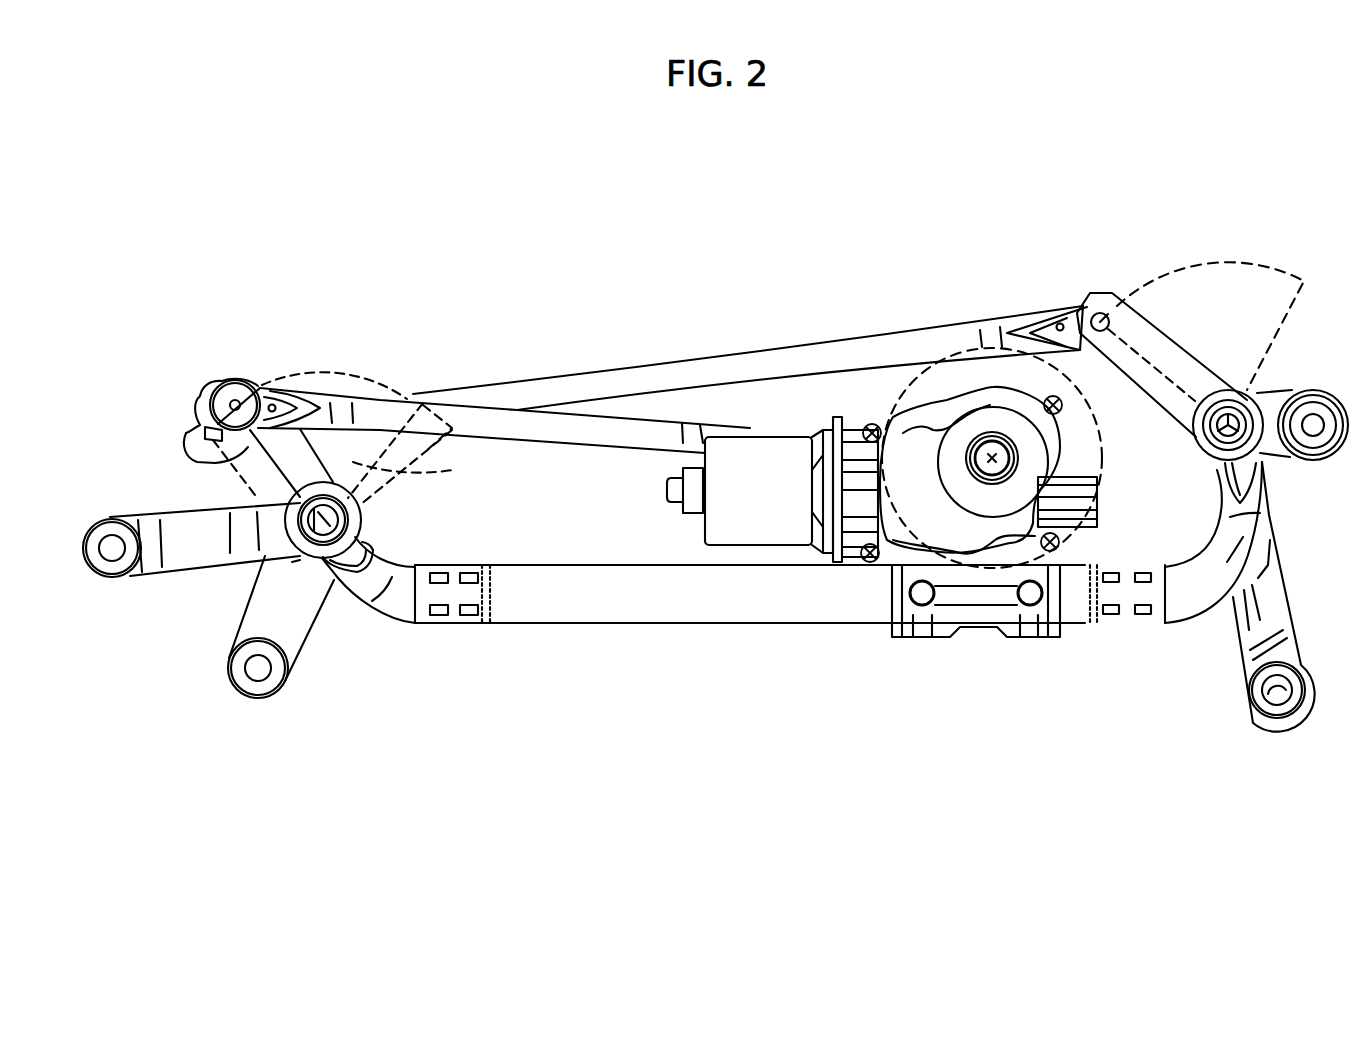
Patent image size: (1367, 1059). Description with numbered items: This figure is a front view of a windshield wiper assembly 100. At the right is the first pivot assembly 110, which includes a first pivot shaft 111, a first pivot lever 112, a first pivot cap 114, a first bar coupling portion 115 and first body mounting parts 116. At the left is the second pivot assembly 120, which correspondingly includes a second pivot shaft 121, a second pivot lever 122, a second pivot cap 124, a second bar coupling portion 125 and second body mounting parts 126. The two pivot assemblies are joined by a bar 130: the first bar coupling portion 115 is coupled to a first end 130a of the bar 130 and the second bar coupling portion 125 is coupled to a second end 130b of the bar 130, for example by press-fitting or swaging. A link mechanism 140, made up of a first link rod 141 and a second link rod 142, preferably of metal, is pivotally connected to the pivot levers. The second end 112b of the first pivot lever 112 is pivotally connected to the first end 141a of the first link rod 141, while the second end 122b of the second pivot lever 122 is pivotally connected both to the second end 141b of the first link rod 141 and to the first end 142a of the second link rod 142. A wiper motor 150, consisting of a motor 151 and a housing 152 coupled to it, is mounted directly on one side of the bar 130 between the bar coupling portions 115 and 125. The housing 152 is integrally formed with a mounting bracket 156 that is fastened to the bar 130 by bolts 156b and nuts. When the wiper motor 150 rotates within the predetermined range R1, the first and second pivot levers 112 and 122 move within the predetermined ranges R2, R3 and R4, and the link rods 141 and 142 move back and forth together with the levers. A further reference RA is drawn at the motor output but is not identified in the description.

The wiper assembly 100 is at (427, 263).
The first pivot assembly 110 is at (1290, 248).
The first pivot shaft 111 is at (1222, 440).
The first pivot lever 112 is at (1135, 368).
The second end of the first pivot lever 112b is at (1090, 312).
The first pivot cap 114 is at (1283, 393).
The first bar coupling portion 115 is at (1097, 622).
The first body mounting parts 116 is at (1277, 450).
The second pivot assembly 120 is at (88, 493).
The second pivot shaft 121 is at (300, 540).
The second pivot lever 122 is at (188, 456).
The second end of the second pivot lever 122b is at (190, 423).
The second pivot cap 124 is at (362, 535).
The second bar coupling portion 125 is at (481, 625).
The second body mounting parts 126 is at (188, 557).
The bar 130 is at (622, 612).
The first end of the bar 130a is at (1118, 605).
The second end of the bar 130b is at (462, 632).
The link mechanism 140 is at (620, 352).
The first link rod 141 is at (830, 357).
The first end of the first link rod 141a is at (1035, 293).
The second end of the first link rod 141b is at (303, 432).
The second link rod 142 is at (523, 427).
The first end of the second link rod 142a is at (240, 370).
The wiper motor 150 is at (648, 495).
The motor 151 is at (743, 522).
The housing 152 is at (857, 448).
The mounting bracket 156 is at (968, 628).
The bolts 156b is at (921, 598).
The predetermined range R1 is at (927, 370).
The predetermined range R2 is at (1233, 260).
The predetermined range R3 is at (268, 484).
The predetermined range R4 is at (452, 471).
The output shaft axis RA is at (990, 455).